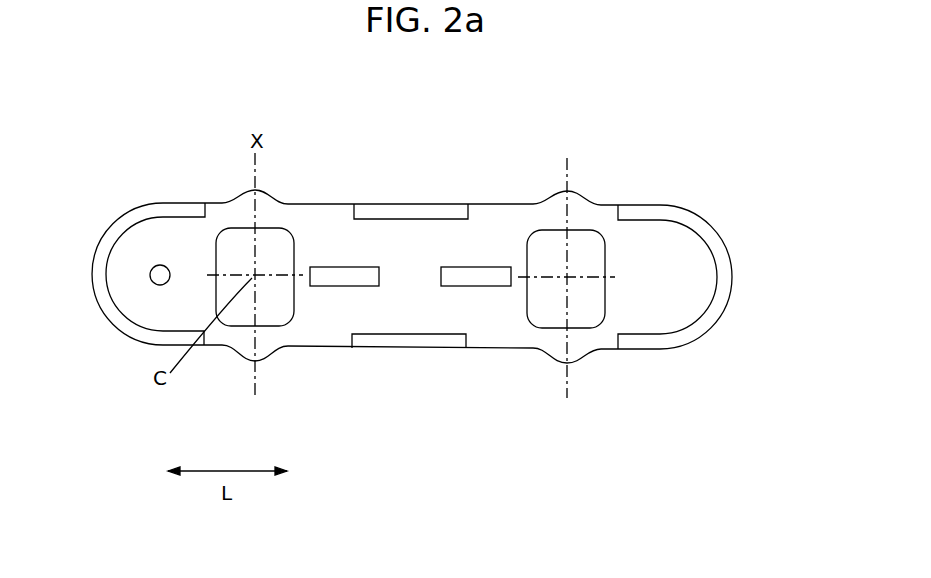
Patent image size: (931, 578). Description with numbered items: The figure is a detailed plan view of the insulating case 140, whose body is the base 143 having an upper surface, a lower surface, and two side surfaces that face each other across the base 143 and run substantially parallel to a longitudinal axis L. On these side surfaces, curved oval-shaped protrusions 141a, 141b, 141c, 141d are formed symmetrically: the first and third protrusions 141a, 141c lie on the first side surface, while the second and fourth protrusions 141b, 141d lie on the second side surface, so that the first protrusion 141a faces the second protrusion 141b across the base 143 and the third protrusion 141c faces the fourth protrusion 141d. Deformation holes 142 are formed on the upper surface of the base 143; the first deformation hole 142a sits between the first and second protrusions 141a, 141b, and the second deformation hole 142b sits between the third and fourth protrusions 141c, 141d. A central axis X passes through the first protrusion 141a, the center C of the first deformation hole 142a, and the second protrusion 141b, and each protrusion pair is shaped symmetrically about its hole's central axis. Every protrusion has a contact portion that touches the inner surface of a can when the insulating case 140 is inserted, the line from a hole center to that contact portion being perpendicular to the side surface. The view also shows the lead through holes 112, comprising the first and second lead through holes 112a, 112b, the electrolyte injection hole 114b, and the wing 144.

The substrate plate 140 is at (98, 113).
The electrolyte injection hole 114b is at (160, 265).
The first protrusion 141a is at (237, 358).
The second protrusion 141b is at (243, 198).
The third protrusion 141c is at (577, 356).
The fourth protrusion 141d is at (582, 198).
The deformation holes 142 is at (497, 410).
The first deformation hole 142a is at (293, 310).
The second deformation hole 142b is at (528, 310).
The lead through holes 112 is at (480, 133).
The first lead through hole 112a is at (336, 267).
The second lead through hole 112b is at (473, 267).
The base 143 is at (687, 289).
The wing 144 is at (710, 228).